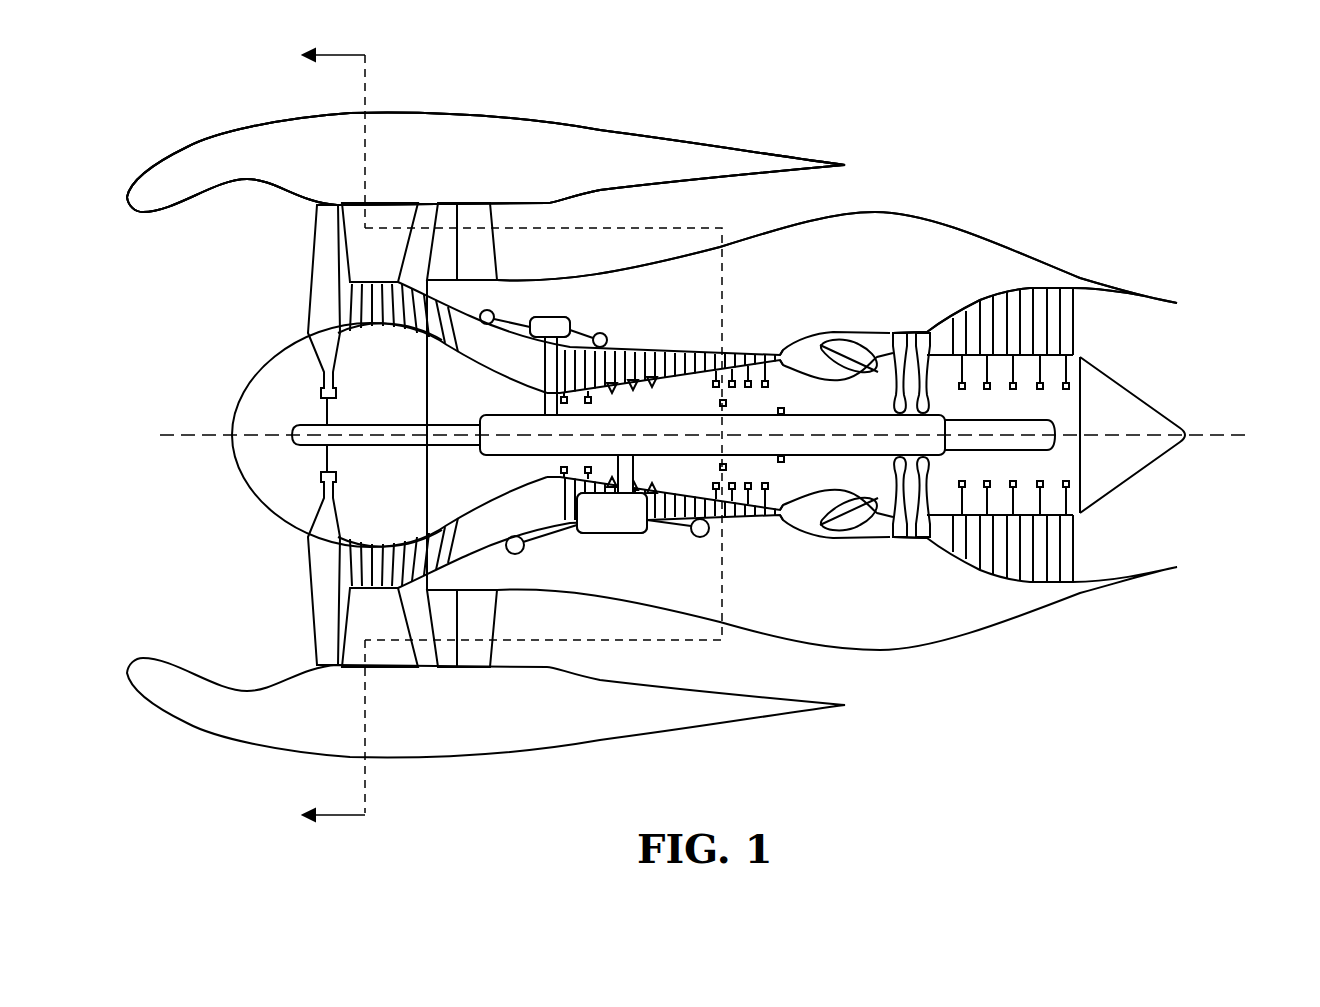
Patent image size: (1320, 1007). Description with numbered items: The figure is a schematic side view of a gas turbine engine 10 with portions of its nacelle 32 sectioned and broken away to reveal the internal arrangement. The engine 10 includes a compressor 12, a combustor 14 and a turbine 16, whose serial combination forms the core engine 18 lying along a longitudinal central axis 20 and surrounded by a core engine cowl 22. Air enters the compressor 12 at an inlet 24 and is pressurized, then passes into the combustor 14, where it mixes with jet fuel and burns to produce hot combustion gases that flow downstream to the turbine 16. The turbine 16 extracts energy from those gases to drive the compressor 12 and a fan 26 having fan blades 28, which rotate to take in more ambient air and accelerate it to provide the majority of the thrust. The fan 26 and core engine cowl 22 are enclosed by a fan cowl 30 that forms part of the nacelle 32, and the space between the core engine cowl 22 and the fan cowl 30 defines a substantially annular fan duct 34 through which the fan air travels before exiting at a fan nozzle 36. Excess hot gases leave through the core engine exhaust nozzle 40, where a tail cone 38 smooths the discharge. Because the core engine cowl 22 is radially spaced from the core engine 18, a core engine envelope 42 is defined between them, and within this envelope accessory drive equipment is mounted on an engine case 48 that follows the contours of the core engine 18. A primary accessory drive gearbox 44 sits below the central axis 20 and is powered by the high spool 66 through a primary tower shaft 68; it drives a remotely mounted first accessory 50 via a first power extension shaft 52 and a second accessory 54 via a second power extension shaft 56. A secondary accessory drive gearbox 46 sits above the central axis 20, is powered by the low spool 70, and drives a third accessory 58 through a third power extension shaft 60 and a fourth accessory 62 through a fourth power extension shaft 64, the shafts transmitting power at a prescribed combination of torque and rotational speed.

The gas turbine engine 10 is at (1130, 195).
The compressor 12 is at (497, 470).
The combustor 14 is at (848, 330).
The turbine 16 is at (975, 562).
The core engine 18 is at (1007, 576).
The longitudinal central axis 20 is at (1245, 437).
The core engine cowl 22 is at (1072, 262).
The inlet 24 is at (360, 558).
The fan 26 is at (282, 375).
The fan blades 28 is at (320, 260).
The fan cowl 30 is at (600, 190).
The nacelle 32 is at (227, 130).
The fan duct 34 is at (740, 210).
The fan nozzle 36 is at (840, 187).
The tail cone 38 is at (1127, 487).
The core engine exhaust nozzle 40 is at (1133, 328).
The core engine envelope 42 is at (790, 343).
The primary accessory drive gearbox 44 is at (612, 535).
The secondary accessory drive gearbox 46 is at (557, 315).
The engine case 48 is at (418, 292).
The first accessory 50 is at (515, 558).
The first power extension shaft 52 is at (547, 537).
The second accessory 54 is at (710, 537).
The second power extension shaft 56 is at (670, 525).
The third accessory 58 is at (488, 310).
The third power extension shaft 60 is at (550, 317).
The fourth accessory 62 is at (606, 336).
The fourth power extension shaft 64 is at (600, 333).
The high spool 66 is at (803, 455).
The primary tower shaft 68 is at (633, 463).
The low spool 70 is at (983, 418).